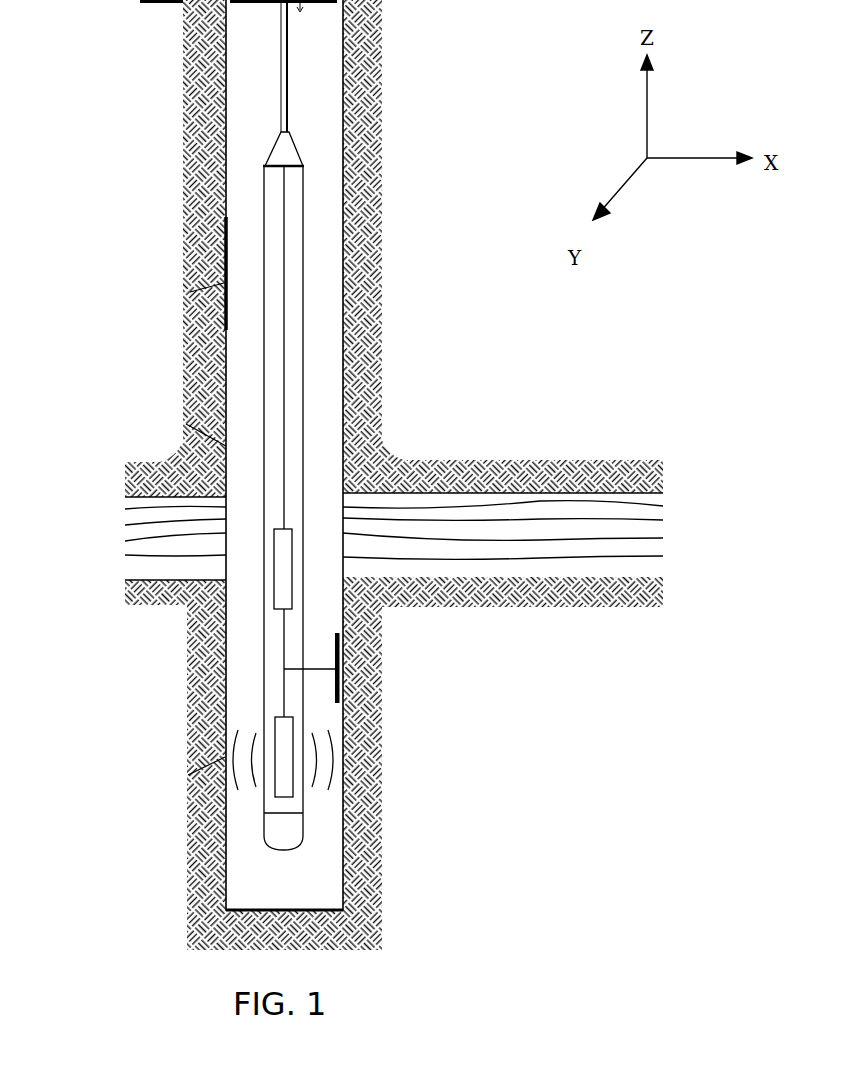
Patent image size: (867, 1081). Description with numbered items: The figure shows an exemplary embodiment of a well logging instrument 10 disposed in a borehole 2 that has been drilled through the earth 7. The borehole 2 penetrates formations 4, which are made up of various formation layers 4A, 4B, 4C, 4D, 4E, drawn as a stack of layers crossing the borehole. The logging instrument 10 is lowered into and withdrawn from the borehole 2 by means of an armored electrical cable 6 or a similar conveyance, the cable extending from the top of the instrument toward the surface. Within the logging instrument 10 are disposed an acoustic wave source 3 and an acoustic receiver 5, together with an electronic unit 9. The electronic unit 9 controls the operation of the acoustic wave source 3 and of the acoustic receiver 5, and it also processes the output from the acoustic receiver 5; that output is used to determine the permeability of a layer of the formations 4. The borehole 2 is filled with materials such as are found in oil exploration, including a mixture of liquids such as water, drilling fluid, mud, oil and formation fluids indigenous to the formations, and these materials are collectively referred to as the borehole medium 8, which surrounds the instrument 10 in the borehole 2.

The borehole 2 is at (325, 60).
The acoustic wave source 3 is at (275, 722).
The formations 4 is at (122, 534).
The formation layer 4A is at (667, 495).
The formation layer 4B is at (660, 512).
The formation layer 4C is at (660, 528).
The formation layer 4D is at (660, 547).
The formation layer 4E is at (660, 565).
The acoustic receiver 5 is at (340, 657).
The armored electrical cable 6 is at (283, 68).
The earth 7 is at (368, 768).
The borehole medium 8 is at (284, 887).
The electronic unit 9 is at (278, 585).
The well logging instrument 10 is at (312, 228).